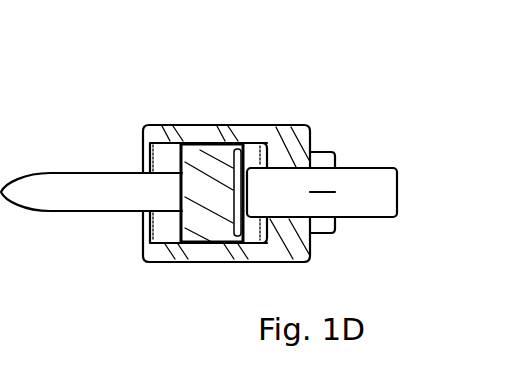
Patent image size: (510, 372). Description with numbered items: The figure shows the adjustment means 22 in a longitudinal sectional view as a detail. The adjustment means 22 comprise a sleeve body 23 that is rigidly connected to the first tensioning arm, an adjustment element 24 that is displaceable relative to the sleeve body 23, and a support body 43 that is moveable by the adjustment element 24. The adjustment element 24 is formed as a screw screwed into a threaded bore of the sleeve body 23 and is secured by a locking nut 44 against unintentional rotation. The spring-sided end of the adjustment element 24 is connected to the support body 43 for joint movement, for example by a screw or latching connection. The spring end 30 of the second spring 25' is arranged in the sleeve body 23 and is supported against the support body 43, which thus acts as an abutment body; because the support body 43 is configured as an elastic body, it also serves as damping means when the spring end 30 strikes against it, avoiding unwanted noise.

The adjustment means 22 is at (216, 88).
The sleeve body 23 is at (250, 132).
The adjustment element 24 is at (362, 182).
The second spring 25' is at (91, 150).
The spring end 30 is at (158, 186).
The support body 43 is at (203, 222).
The locking nut 44 is at (322, 163).